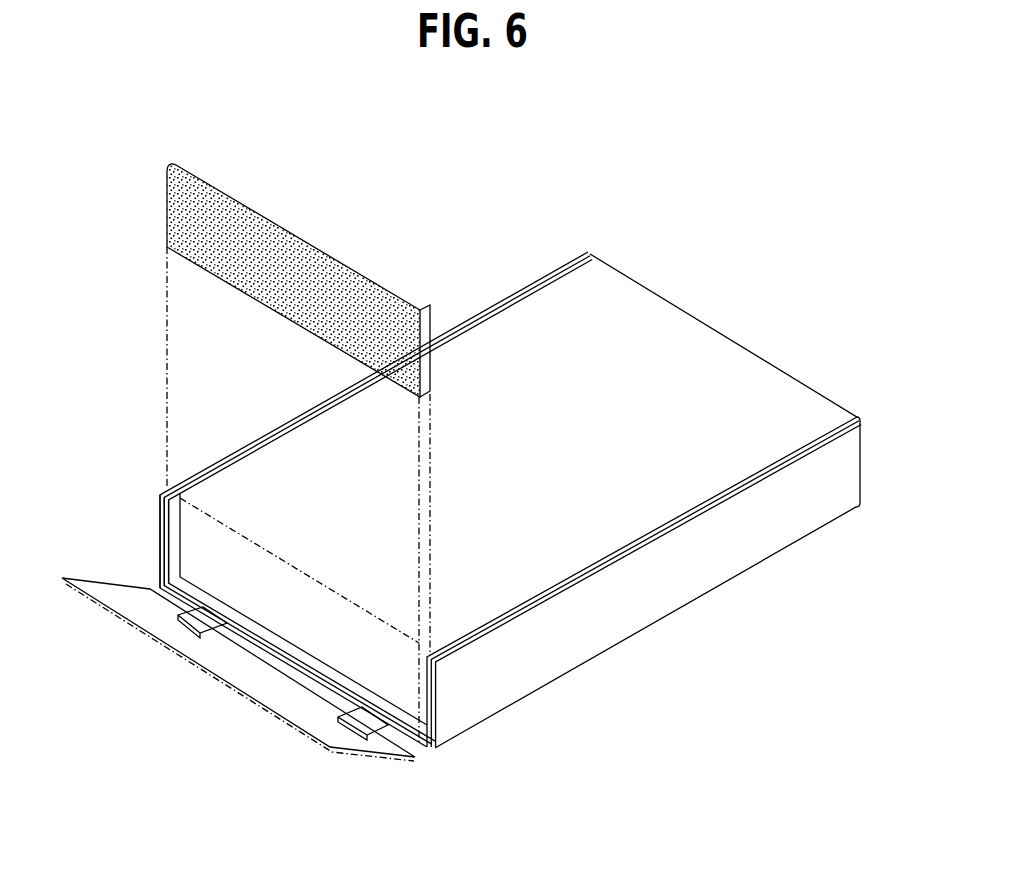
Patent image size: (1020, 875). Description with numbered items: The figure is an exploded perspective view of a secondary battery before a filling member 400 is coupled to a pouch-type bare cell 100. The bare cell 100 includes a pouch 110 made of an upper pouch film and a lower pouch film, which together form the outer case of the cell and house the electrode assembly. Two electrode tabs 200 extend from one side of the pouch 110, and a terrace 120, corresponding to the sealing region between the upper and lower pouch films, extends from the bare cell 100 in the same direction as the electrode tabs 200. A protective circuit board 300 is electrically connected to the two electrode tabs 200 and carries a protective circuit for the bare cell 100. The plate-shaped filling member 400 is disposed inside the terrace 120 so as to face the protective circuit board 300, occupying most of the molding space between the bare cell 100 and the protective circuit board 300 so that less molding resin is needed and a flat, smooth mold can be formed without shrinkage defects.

The pouch-type bare cell 100 is at (750, 325).
The pouch 110 is at (767, 538).
The terrace 120 is at (157, 542).
The electrode tabs 200 is at (357, 732).
The protective circuit board 300 is at (296, 708).
The filling member 400 is at (306, 247).